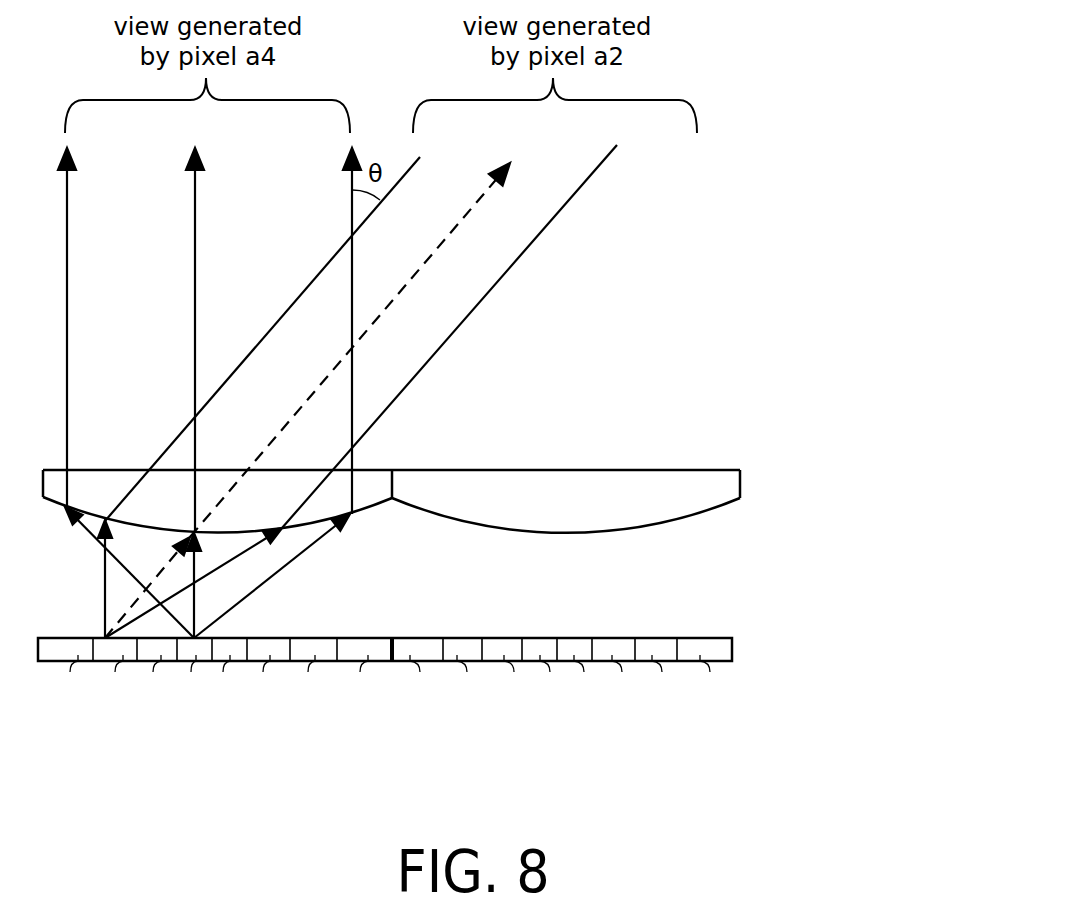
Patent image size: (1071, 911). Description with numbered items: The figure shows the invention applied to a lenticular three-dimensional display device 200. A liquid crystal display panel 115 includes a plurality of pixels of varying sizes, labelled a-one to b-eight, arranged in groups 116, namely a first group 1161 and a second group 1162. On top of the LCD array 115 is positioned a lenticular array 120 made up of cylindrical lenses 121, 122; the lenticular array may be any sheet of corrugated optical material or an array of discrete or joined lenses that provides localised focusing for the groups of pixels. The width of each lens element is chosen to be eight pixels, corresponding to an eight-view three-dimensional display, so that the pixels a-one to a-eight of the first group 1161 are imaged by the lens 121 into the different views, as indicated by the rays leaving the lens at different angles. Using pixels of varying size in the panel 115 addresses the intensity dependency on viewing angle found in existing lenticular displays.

The lenticular 3D display device 200 is at (792, 101).
The lenticular array 120 is at (742, 487).
The cylindrical lens 121 is at (115, 468).
The cylindrical lens 122 is at (657, 467).
The pixel group 116 is at (670, 602).
The liquid crystal display panel 115 is at (733, 653).
The first pixel group 1161 is at (378, 717).
The second pixel group 1162 is at (733, 717).